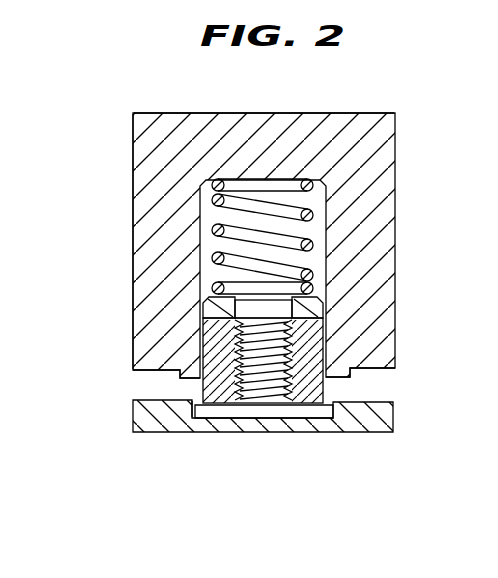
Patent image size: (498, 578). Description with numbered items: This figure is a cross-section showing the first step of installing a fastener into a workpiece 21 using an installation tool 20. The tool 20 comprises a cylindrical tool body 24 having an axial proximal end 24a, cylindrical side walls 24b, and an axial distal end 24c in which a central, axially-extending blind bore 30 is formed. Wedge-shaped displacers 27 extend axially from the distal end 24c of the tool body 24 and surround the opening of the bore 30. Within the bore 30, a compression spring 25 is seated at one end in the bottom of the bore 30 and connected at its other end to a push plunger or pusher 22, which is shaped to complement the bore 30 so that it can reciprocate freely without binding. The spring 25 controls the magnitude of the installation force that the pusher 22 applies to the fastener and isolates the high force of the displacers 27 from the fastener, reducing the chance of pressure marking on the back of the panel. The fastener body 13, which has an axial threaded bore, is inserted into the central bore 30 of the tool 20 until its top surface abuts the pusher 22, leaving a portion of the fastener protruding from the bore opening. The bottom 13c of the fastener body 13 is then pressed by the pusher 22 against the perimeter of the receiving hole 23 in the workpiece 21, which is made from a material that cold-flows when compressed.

The installation tool 20 is at (238, 297).
The tool body 24 is at (133, 215).
The proximal end 24a is at (224, 94).
The side walls 24b is at (133, 250).
The distal end 24c is at (142, 374).
The displacers 27 is at (343, 377).
The blind bore 30 is at (337, 238).
The compression spring 25 is at (287, 210).
The fastener body 13 is at (221, 400).
The bottom of the body 13c is at (313, 406).
The pusher 22 is at (208, 310).
The workpiece 21 is at (133, 415).
The receiving hole 23 is at (204, 416).